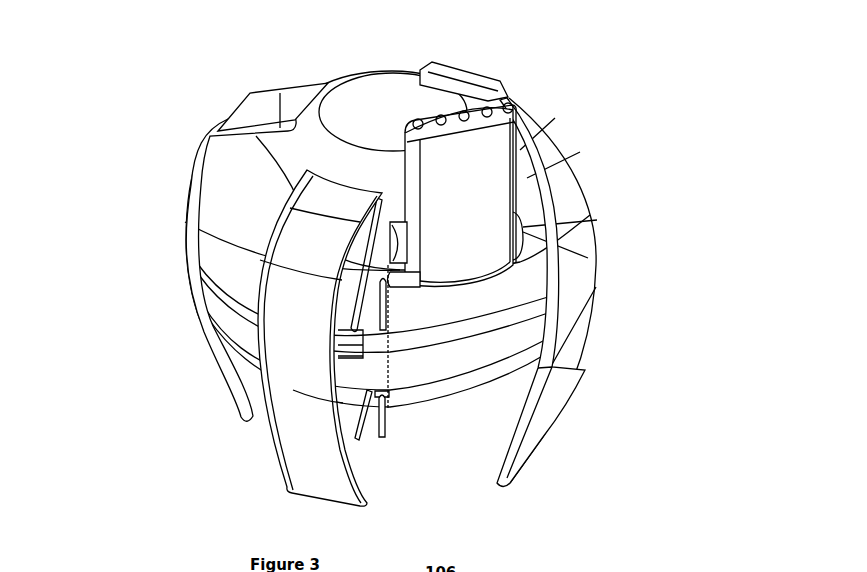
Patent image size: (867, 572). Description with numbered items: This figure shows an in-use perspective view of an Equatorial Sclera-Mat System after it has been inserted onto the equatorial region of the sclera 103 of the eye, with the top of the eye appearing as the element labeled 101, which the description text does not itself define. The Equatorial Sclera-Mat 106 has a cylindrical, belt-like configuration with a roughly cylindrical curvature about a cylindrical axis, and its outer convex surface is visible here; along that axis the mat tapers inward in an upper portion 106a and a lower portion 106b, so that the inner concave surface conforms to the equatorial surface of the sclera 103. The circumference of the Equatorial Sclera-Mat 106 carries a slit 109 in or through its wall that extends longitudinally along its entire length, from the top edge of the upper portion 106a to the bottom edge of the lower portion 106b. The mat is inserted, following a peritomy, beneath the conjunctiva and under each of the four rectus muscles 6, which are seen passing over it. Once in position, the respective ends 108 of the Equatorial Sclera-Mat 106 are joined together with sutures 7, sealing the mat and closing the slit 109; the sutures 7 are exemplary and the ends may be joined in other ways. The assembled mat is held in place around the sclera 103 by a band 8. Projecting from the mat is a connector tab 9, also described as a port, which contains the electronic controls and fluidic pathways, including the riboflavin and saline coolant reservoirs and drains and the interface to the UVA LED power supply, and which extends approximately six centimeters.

The rectus muscles 6 is at (282, 117).
The sutures 7 is at (379, 320).
The band 8 is at (208, 290).
The connector tab 9 is at (478, 182).
The cap 101 is at (393, 112).
The sclera 103 is at (383, 374).
The Equatorial Sclera-Mat 106 is at (225, 262).
The upper portion 106a is at (247, 207).
The lower portion 106b is at (247, 338).
The ends 108 is at (381, 243).
The slit 109 is at (376, 391).